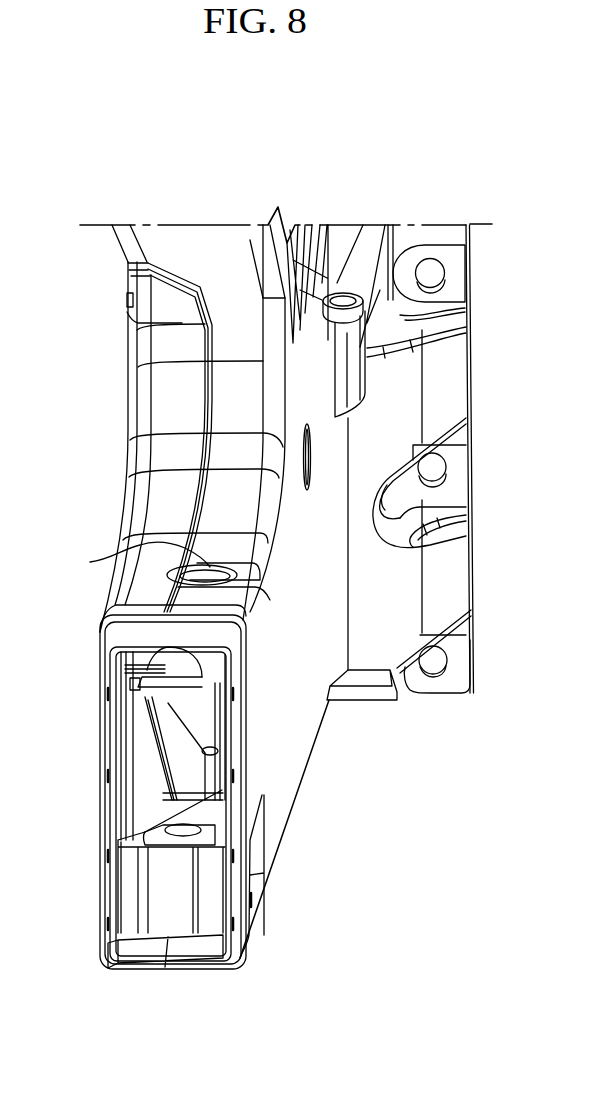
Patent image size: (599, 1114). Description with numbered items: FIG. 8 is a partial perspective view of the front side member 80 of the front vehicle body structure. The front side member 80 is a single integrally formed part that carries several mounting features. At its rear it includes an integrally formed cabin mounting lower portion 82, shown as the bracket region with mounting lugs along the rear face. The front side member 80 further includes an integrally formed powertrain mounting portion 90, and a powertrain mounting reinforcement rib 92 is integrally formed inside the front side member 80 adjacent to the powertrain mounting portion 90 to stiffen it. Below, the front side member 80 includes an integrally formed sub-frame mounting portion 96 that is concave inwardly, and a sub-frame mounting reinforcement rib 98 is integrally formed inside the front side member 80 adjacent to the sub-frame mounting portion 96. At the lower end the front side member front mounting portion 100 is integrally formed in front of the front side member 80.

The front side member 80 is at (327, 770).
The cabin mounting lower portion 82 is at (452, 478).
The powertrain mounting portion 90 is at (178, 566).
The powertrain mounting reinforcement rib 92 is at (120, 664).
The sub-frame mounting portion 96 is at (256, 945).
The sub-frame mounting reinforcement rib 98 is at (128, 878).
The front side member front mounting portion 100 is at (223, 968).